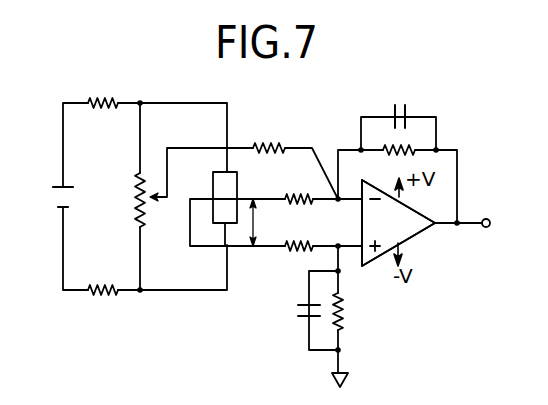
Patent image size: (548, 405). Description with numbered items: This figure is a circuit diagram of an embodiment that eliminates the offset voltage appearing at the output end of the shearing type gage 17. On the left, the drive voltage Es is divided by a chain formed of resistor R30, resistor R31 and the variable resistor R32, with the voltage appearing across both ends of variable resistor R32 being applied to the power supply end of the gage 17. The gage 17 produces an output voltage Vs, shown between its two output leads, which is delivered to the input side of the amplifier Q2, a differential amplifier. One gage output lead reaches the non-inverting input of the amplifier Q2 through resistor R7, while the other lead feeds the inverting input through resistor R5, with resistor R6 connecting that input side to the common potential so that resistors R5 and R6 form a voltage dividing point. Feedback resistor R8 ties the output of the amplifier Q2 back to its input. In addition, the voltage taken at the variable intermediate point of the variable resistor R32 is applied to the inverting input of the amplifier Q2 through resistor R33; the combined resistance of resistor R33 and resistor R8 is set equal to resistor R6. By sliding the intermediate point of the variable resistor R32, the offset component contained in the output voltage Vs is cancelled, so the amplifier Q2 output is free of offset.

The shearing type gage 17 is at (237, 179).
The amplifier Q2 is at (417, 236).
The resistor R30 is at (104, 91).
The resistor R31 is at (104, 304).
The variable resistor R32 is at (124, 200).
The resistor R33 is at (269, 135).
The resistor R7 is at (299, 186).
The resistor R5 is at (299, 234).
The resistor R8 is at (393, 153).
The resistor R6 is at (351, 311).
The drive voltage ES is at (48, 197).
The output voltage VS is at (265, 222).